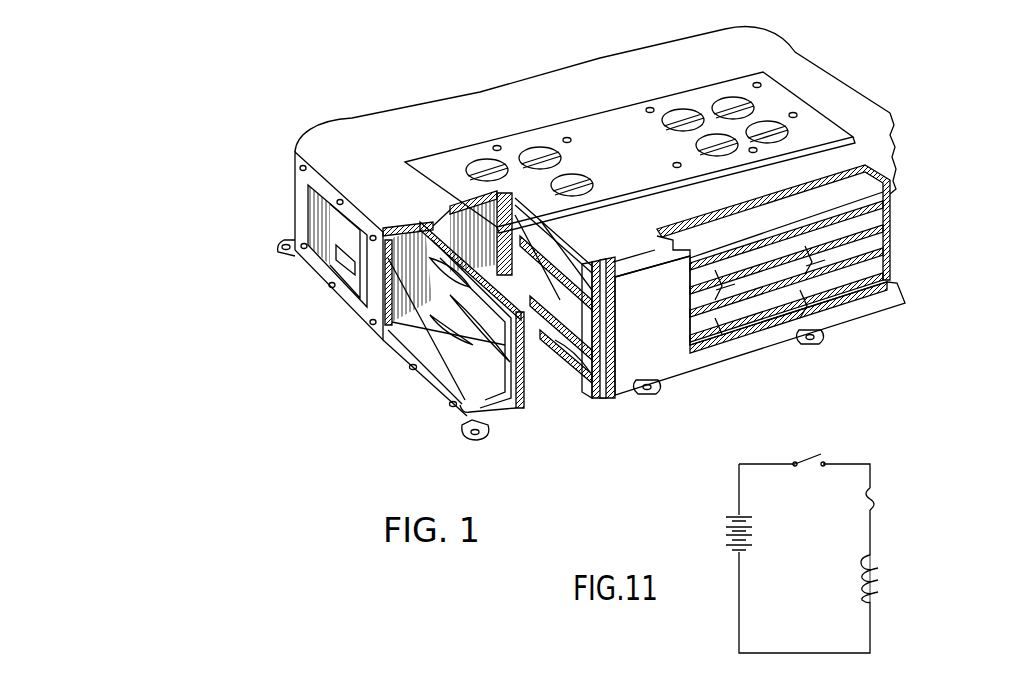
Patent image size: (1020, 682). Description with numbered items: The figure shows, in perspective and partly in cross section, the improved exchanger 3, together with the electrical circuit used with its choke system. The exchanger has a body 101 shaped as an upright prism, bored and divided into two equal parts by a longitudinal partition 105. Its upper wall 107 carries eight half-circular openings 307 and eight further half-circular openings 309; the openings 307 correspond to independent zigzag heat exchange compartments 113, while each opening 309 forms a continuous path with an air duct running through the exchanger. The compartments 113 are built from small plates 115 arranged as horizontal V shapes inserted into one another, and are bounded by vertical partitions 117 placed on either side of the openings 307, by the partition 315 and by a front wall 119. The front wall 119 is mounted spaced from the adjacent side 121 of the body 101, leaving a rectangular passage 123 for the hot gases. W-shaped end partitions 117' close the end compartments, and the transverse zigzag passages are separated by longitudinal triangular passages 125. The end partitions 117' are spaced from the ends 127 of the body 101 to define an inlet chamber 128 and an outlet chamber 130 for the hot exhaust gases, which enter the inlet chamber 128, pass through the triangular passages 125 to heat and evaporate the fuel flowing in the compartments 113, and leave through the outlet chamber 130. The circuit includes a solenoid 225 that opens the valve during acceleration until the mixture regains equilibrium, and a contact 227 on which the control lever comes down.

In FIG. 1, the device 3 is at (866, 92).
In FIG. 1, the body 101 is at (829, 90).
In FIG. 1, the longitudinal partition 105 is at (393, 312).
In FIG. 1, the upper wall 107 is at (800, 80).
In FIG. 1, the heat exchange compartments 113 is at (770, 293).
In FIG. 1, the small plates 115 is at (585, 252).
In FIG. 1, the vertical partitions 117 is at (773, 253).
In FIG. 1, the end partitions 117' is at (469, 363).
In FIG. 1, the front wall 119 is at (587, 365).
In FIG. 1, the adjacent side 121 is at (663, 333).
In FIG. 1, the rectangular passage 123 is at (602, 387).
In FIG. 1, the longitudinal triangular passages 125 is at (450, 270).
In FIG. 1, the ends 127 is at (378, 293).
In FIG. 1, the inlet chamber 128 is at (438, 375).
In FIG. 1, the outlet chamber 130 is at (313, 210).
In FIG. 11, the solenoid 225 is at (878, 583).
In FIG. 11, the contact 227 is at (803, 450).
In FIG. 1, the half-circular openings 307 is at (540, 148).
In FIG. 1, the half-circular openings 309 is at (735, 112).
In FIG. 1, the partition 315 is at (460, 233).